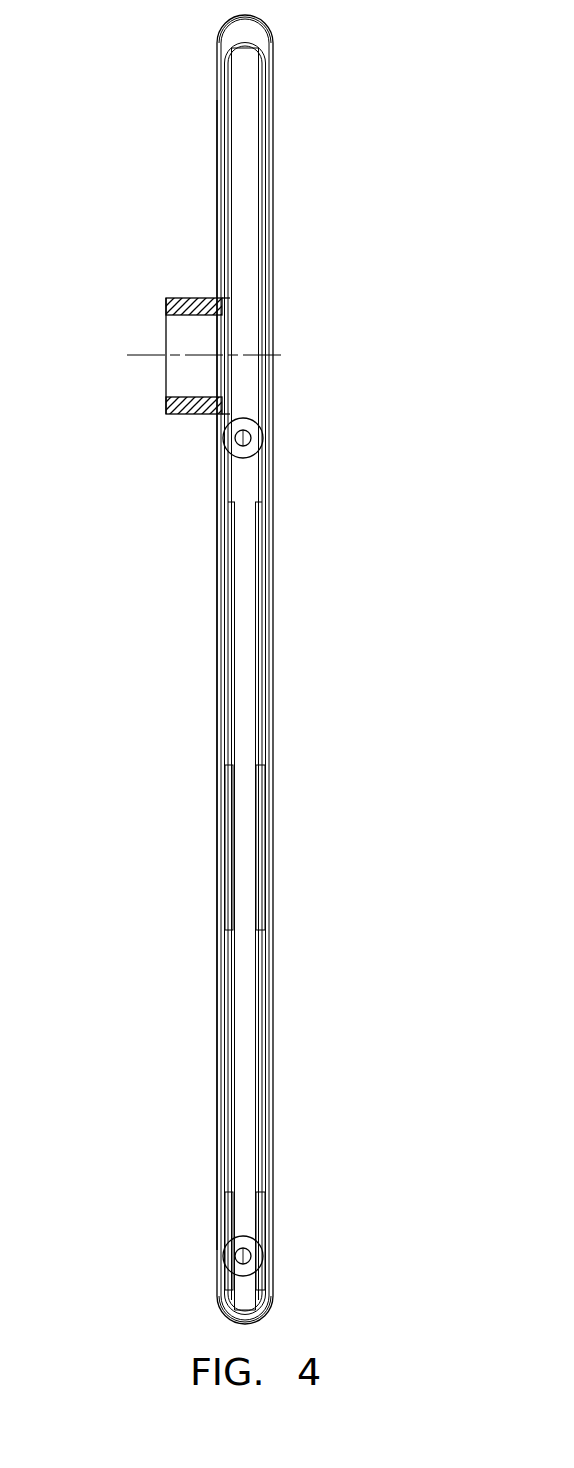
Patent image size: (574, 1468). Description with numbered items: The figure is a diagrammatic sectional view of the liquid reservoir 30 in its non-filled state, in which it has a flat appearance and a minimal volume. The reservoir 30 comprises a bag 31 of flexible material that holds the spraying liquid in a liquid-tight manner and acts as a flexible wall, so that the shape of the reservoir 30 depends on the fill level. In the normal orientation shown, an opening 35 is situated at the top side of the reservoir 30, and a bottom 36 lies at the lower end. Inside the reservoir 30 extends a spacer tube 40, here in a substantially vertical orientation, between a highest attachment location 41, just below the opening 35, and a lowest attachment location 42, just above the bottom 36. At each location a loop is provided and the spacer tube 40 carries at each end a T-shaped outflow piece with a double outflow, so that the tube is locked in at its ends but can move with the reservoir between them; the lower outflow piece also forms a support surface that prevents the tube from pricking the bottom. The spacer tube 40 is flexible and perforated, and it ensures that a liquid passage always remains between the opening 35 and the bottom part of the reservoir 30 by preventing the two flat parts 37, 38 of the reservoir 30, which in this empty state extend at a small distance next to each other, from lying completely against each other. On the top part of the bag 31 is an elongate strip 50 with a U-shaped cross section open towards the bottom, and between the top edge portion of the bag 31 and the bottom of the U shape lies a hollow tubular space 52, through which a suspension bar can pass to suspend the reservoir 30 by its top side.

The reservoir 30 is at (245, 748).
The bag 31 is at (270, 907).
The opening 35 is at (185, 334).
The bottom 36 is at (262, 1300).
The part of the reservoir 37 is at (218, 683).
The part of the reservoir 38 is at (270, 539).
The spacer tube 40 is at (228, 868).
The highest attachment location 41 is at (241, 438).
The lowest attachment location 42 is at (240, 1256).
The elongate strip 50 is at (267, 31).
The hollow tubular space 52 is at (240, 31).